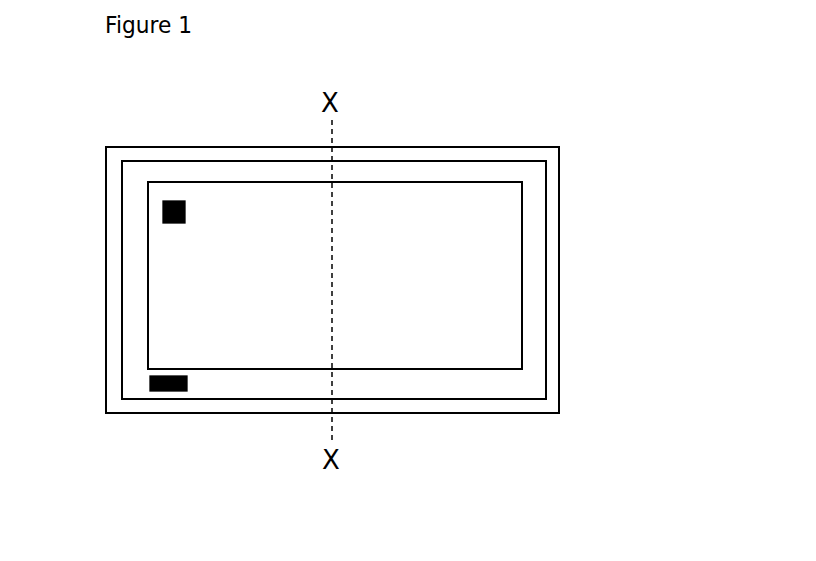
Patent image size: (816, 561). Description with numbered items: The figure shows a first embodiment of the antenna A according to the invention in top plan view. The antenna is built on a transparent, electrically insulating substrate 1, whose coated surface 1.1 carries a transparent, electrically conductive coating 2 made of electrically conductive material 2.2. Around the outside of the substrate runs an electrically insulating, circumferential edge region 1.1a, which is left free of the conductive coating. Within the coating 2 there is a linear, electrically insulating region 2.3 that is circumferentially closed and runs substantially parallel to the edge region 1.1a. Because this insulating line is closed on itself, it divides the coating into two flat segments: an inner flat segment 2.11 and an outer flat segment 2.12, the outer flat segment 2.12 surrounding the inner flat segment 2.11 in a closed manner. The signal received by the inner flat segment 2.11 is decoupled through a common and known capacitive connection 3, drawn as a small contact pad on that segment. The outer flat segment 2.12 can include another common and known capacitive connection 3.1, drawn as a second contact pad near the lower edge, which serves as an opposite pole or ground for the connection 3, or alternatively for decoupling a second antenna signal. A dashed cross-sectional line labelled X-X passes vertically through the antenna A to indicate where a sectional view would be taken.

The antenna A is at (384, 132).
The transparent, electrically insulating substrate 1 is at (475, 428).
The coated surface of the transparent, electrically insulating substrate 1.1 is at (408, 463).
The electrically insulating, circumferential edge region 1.1a is at (393, 414).
The transparent, electrically conductive coating 2 is at (449, 206).
The electrically conductive material 2.2 is at (545, 222).
The flat segment 2.12 is at (540, 258).
The linear, electrically insulating region 2.3 is at (538, 289).
The flat segment 2.11 is at (479, 307).
The capacitive connection or galvanic connection 3 is at (160, 209).
The capacitive connection or galvanic connection 3.1 is at (160, 391).